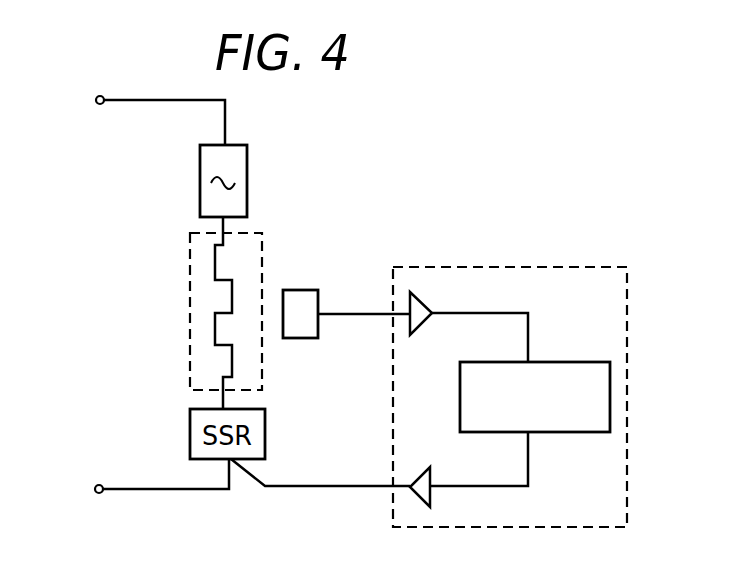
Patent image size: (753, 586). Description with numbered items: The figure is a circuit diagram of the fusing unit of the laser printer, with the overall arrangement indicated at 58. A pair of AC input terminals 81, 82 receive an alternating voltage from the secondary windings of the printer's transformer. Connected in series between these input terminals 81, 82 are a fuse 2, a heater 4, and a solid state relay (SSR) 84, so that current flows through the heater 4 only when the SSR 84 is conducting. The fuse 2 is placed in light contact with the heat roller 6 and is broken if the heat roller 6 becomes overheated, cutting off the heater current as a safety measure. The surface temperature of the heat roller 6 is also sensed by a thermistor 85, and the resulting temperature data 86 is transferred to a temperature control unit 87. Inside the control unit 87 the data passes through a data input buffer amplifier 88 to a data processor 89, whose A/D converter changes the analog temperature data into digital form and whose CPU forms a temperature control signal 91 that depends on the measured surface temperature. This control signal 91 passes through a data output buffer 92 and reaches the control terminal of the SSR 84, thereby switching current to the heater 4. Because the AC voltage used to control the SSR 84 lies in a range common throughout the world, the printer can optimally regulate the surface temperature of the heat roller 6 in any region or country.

The fuse 2 is at (247, 176).
The heater 4 is at (215, 333).
The heat roller 6 is at (190, 280).
The control system 58 is at (398, 176).
The AC input terminal 81 is at (100, 105).
The AC input terminal 82 is at (96, 485).
The solid state relay (SSR) 84 is at (333, 485).
The thermistor 85 is at (302, 290).
The temperature data 86 is at (348, 313).
The temperature control unit 87 is at (490, 266).
The data input buffer amplifier 88 is at (420, 328).
The data processor 89 is at (557, 362).
The temperature control signal 91 is at (529, 462).
The data output buffer 92 is at (418, 466).